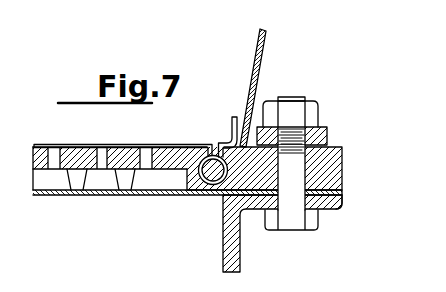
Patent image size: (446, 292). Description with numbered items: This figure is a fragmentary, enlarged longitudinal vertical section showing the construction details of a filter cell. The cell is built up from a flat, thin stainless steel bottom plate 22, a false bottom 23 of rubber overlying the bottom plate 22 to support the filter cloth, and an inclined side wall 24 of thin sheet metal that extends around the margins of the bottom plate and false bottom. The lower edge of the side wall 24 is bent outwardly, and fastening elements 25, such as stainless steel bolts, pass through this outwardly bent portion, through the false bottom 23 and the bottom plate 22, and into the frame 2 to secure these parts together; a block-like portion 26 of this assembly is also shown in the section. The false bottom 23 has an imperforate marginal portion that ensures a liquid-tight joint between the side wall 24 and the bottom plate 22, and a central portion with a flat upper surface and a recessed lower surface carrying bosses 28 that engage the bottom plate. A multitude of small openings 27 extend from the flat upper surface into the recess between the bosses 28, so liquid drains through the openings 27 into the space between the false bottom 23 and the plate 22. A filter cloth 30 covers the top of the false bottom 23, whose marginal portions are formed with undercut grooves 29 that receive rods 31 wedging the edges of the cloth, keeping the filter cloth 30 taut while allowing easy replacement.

The frame 2 is at (223, 257).
The bottom plate 22 is at (157, 195).
The false bottom 23 is at (84, 157).
The side wall 24 is at (255, 57).
The fastening elements 25 is at (292, 226).
The mounting block 26 is at (337, 180).
The small openings 27 is at (54, 157).
The bosses 28 is at (80, 183).
The undercut grooves 29 is at (203, 162).
The filter cloth 30 is at (233, 121).
The rods 31 is at (197, 196).